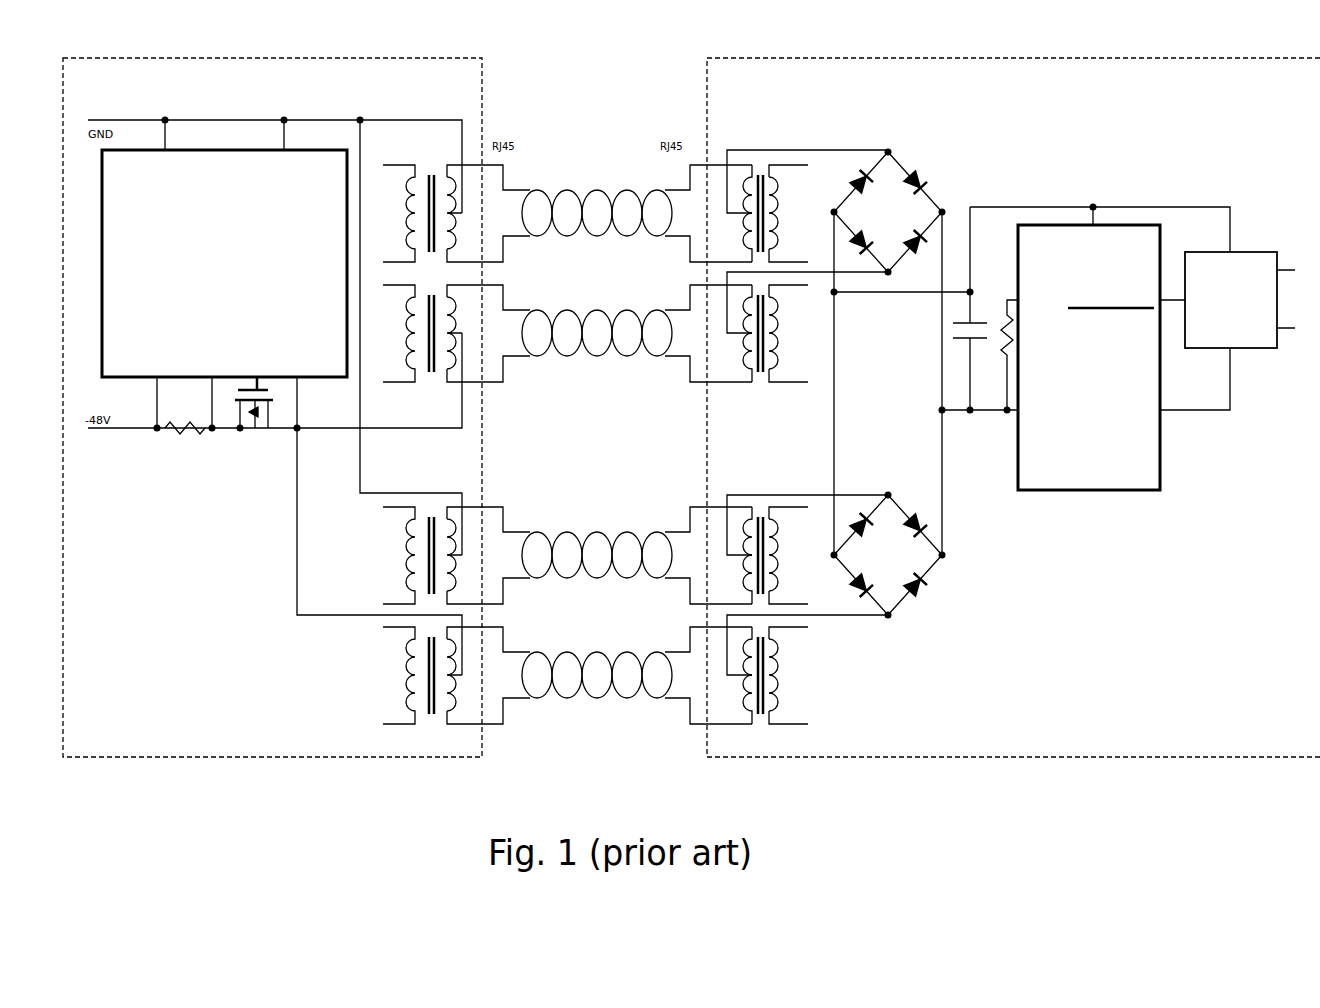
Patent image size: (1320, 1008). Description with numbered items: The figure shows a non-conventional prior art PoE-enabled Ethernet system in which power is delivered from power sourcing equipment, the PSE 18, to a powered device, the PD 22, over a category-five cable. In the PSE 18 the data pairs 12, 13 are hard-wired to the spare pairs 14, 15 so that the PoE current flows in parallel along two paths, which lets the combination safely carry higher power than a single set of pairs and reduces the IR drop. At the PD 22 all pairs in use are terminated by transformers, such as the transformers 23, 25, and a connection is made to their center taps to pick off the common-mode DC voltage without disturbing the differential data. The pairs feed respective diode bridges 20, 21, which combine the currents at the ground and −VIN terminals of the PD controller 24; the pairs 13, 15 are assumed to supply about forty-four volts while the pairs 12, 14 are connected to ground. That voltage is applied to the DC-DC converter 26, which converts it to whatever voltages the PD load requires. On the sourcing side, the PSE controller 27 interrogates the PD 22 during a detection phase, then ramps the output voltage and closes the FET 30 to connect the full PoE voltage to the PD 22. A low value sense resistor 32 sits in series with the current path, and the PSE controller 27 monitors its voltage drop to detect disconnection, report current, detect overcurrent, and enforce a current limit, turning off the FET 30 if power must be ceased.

The data pair 12 is at (562, 178).
The data pair 13 is at (562, 305).
The spare pair 14 is at (570, 530).
The spare pair 15 is at (580, 638).
The PSE 18 is at (480, 110).
The diode bridge 20 is at (927, 172).
The diode bridge 21 is at (947, 572).
The PD 22 is at (702, 110).
The transformer 23 is at (767, 135).
The PD controller 24 is at (1160, 455).
The transformer 25 is at (758, 395).
The DC-DC converter 26 is at (1245, 252).
The PSE controller 27 is at (235, 319).
The FET 30 is at (252, 447).
The sense resistor 32 is at (187, 443).